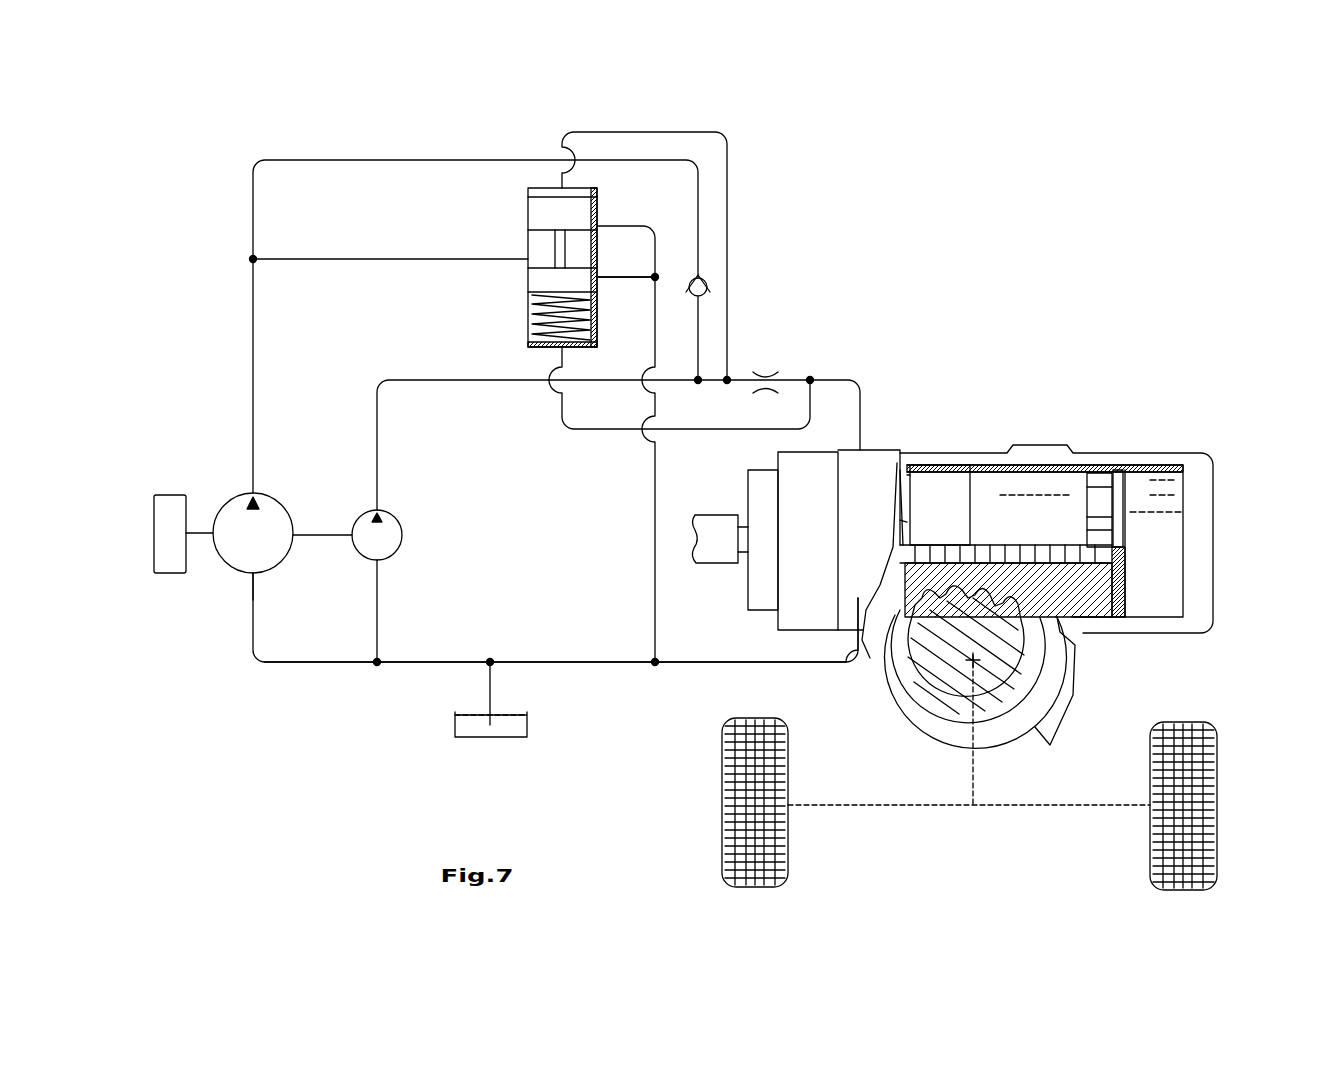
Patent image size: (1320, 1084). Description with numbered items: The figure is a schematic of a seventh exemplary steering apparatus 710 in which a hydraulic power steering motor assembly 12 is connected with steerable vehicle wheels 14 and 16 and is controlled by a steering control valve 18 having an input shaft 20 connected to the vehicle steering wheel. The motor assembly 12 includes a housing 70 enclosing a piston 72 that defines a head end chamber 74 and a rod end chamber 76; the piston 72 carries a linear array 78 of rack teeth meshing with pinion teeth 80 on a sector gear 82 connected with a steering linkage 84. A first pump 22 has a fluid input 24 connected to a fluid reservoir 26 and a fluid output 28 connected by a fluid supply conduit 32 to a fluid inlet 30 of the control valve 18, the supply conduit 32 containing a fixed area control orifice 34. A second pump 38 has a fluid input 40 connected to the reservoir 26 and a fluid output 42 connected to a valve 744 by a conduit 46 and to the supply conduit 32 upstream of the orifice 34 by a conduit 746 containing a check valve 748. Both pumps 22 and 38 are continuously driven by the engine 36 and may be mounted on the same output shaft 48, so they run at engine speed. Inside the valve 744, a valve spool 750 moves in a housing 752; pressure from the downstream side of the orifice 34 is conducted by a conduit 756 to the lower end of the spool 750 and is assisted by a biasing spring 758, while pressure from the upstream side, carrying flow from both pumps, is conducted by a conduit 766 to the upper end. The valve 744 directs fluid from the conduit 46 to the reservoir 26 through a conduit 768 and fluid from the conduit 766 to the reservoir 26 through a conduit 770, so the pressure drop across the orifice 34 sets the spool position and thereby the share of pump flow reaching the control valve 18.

The hydraulic power steering motor assembly 12 is at (1030, 608).
The steerable vehicle wheel 14 is at (724, 860).
The steerable vehicle wheel 16 is at (1215, 862).
The steering control valve 18 is at (763, 613).
The input shaft 20 is at (712, 550).
The first pump 22 is at (387, 542).
The fluid input 24 is at (377, 562).
The fluid reservoir 26 is at (478, 728).
The fluid output 28 is at (377, 510).
The fluid inlet 30 is at (860, 450).
The fluid supply conduit 32 is at (480, 378).
The fixed area control orifice 34 is at (768, 372).
The engine 36 is at (168, 553).
The second pump 38 is at (237, 530).
The fluid input 40 is at (253, 575).
The fluid output 42 is at (253, 502).
The conduit 46 is at (352, 259).
The output shaft 48 is at (200, 535).
The housing 70 is at (1138, 462).
The piston 72 is at (993, 500).
The head end chamber 74 is at (892, 600).
The rod end chamber 76 is at (1167, 590).
The linear array of rack teeth 78 is at (1068, 640).
The pinion teeth 80 is at (1007, 665).
The sector gear 82 is at (948, 676).
The steering linkage 84 is at (975, 757).
The steering apparatus 710 is at (1057, 292).
The valve 744 is at (547, 257).
The conduit 746 is at (360, 158).
The check valve 748 is at (706, 286).
The valve spool 750 is at (545, 222).
The housing 752 is at (597, 204).
The conduit 756 is at (590, 430).
The biasing spring 758 is at (545, 310).
The conduit 766 is at (730, 162).
The conduit 768 is at (623, 278).
The conduit 770 is at (620, 226).